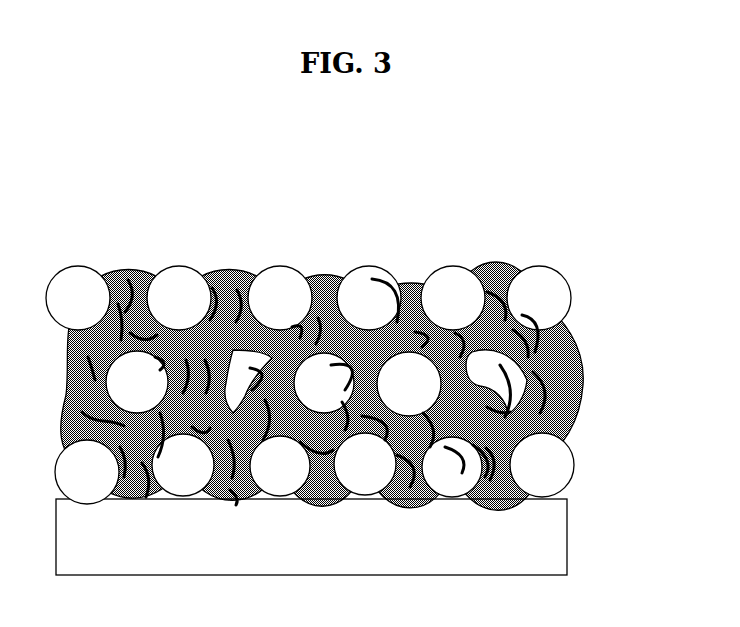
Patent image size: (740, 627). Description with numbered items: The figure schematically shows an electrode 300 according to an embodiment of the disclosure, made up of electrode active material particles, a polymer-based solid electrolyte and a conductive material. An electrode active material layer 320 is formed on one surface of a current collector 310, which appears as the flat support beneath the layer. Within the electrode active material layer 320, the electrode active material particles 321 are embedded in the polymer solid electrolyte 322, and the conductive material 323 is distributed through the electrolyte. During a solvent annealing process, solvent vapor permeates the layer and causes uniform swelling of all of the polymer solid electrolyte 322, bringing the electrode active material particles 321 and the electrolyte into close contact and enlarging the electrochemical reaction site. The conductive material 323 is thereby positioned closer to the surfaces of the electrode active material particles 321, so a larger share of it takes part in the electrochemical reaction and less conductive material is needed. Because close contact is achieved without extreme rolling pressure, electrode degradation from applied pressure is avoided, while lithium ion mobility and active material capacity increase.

The electrode 300 is at (154, 156).
The current collector 310 is at (558, 534).
The electrode active material layer 320 is at (583, 262).
The electrode active material particles 321 is at (73, 270).
The polymer solid electrolyte 322 is at (227, 275).
The conductive material 323 is at (378, 278).